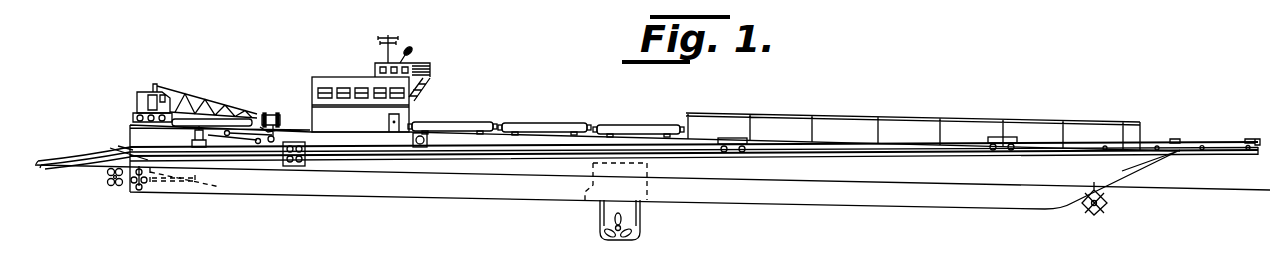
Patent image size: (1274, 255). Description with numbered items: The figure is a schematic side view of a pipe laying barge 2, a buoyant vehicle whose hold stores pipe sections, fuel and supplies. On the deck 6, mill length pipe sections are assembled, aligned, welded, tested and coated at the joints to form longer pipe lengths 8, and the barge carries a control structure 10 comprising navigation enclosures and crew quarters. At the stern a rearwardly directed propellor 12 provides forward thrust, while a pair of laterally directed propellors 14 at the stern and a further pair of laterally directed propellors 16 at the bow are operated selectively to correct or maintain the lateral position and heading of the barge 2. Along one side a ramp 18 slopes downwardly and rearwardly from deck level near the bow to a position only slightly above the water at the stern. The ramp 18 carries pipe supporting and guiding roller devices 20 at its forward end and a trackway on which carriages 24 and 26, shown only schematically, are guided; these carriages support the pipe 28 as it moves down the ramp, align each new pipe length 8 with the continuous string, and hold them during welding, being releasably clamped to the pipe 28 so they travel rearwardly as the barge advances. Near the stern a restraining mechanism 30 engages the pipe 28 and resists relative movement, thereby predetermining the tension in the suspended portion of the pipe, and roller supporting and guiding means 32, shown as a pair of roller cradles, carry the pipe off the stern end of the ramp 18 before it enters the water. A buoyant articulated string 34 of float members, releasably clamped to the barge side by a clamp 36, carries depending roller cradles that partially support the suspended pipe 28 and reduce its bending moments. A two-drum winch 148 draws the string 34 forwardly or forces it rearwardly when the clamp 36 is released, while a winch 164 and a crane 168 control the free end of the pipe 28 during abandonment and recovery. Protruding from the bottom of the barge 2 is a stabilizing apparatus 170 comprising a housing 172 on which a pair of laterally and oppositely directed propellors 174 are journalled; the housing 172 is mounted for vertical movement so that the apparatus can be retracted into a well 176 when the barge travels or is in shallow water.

The barge 2 is at (1081, 160).
The deck 6 is at (617, 125).
The pipe lengths 8 is at (1168, 140).
The control structure 10 is at (424, 63).
The rearwardly directed propellor 12 is at (143, 189).
The laterally directed propellors 14 is at (107, 175).
The laterally directed propellors 16 is at (1095, 212).
The ramp 18 is at (850, 157).
The pipe supporting and guiding roller devices 20 is at (1105, 145).
The carriage 24 is at (997, 135).
The carriage 26 is at (733, 138).
The pipe 28 is at (662, 148).
The restraining mechanism 30 is at (295, 140).
The roller supporting and guiding means 32 is at (150, 160).
The articulated string 34 is at (47, 157).
The clamp 36 is at (194, 140).
The two-drum winch 148 is at (272, 106).
The winch 164 is at (423, 136).
The crane 168 is at (178, 76).
The stabilizing apparatus 170 is at (657, 224).
The housing 172 is at (600, 213).
The propellors 174 is at (630, 236).
The well 176 is at (581, 201).